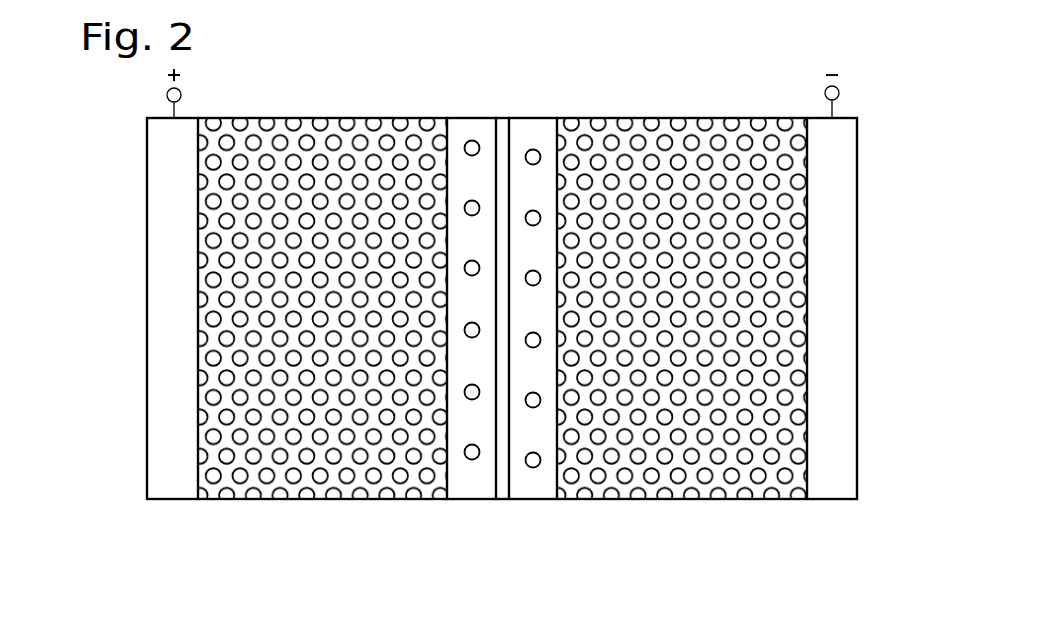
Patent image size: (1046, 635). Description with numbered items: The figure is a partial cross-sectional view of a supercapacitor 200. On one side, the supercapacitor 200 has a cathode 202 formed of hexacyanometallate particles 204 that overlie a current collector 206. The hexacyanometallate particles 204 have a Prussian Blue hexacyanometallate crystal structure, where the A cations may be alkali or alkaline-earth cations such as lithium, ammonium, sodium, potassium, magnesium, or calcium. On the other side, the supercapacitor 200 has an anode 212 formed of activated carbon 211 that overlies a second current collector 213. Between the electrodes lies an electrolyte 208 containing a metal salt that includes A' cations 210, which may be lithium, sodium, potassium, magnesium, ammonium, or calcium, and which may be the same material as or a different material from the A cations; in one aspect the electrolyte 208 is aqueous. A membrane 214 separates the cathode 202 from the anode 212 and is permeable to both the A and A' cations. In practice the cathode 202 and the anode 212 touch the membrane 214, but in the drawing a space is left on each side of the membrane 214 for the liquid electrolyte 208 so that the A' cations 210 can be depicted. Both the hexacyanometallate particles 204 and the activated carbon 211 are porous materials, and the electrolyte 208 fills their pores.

The supercapacitor 200 is at (757, 63).
The cathode 202 is at (322, 359).
The hexacyanometallate particles 204 is at (332, 511).
The current collector 206 is at (173, 487).
The electrolyte 208 is at (579, 311).
The A' cations 210 is at (605, 263).
The activated carbon 211 is at (673, 512).
The anode 212 is at (682, 360).
The current collector 213 is at (830, 488).
The membrane 214 is at (500, 127).